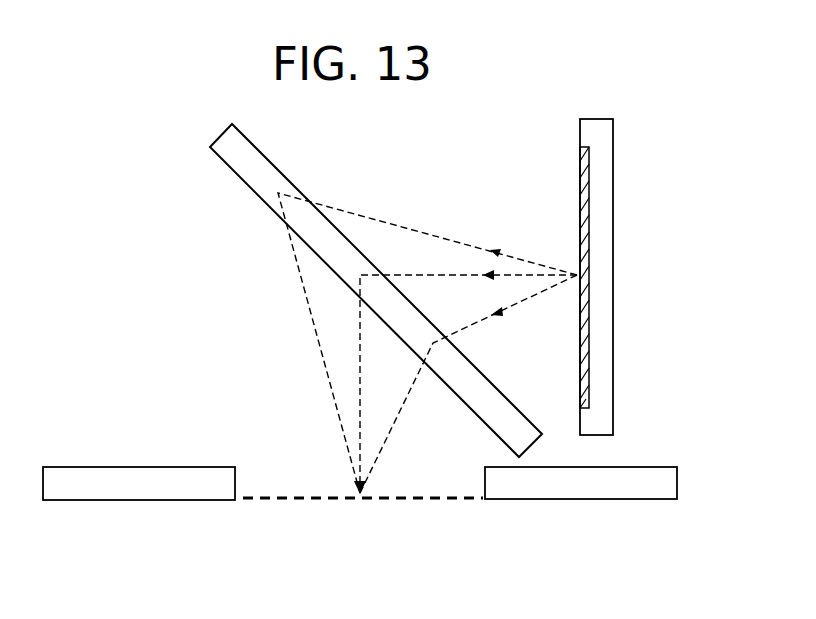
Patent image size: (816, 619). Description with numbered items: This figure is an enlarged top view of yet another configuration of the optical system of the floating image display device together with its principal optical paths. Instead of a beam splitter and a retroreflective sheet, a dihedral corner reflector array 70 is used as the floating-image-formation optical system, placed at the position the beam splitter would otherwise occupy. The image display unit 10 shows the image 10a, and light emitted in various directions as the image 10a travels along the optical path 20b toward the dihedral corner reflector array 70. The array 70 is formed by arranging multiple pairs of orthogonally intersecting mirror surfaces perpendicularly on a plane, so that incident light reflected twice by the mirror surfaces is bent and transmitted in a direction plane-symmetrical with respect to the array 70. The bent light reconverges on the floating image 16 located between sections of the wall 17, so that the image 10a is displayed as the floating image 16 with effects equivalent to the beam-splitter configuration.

The dihedral corner reflector array 70 is at (253, 195).
The image display unit 10 is at (613, 240).
The image 10a is at (586, 190).
The optical path 20b is at (400, 415).
The wall 17 is at (140, 500).
The floating image 16 is at (440, 498).